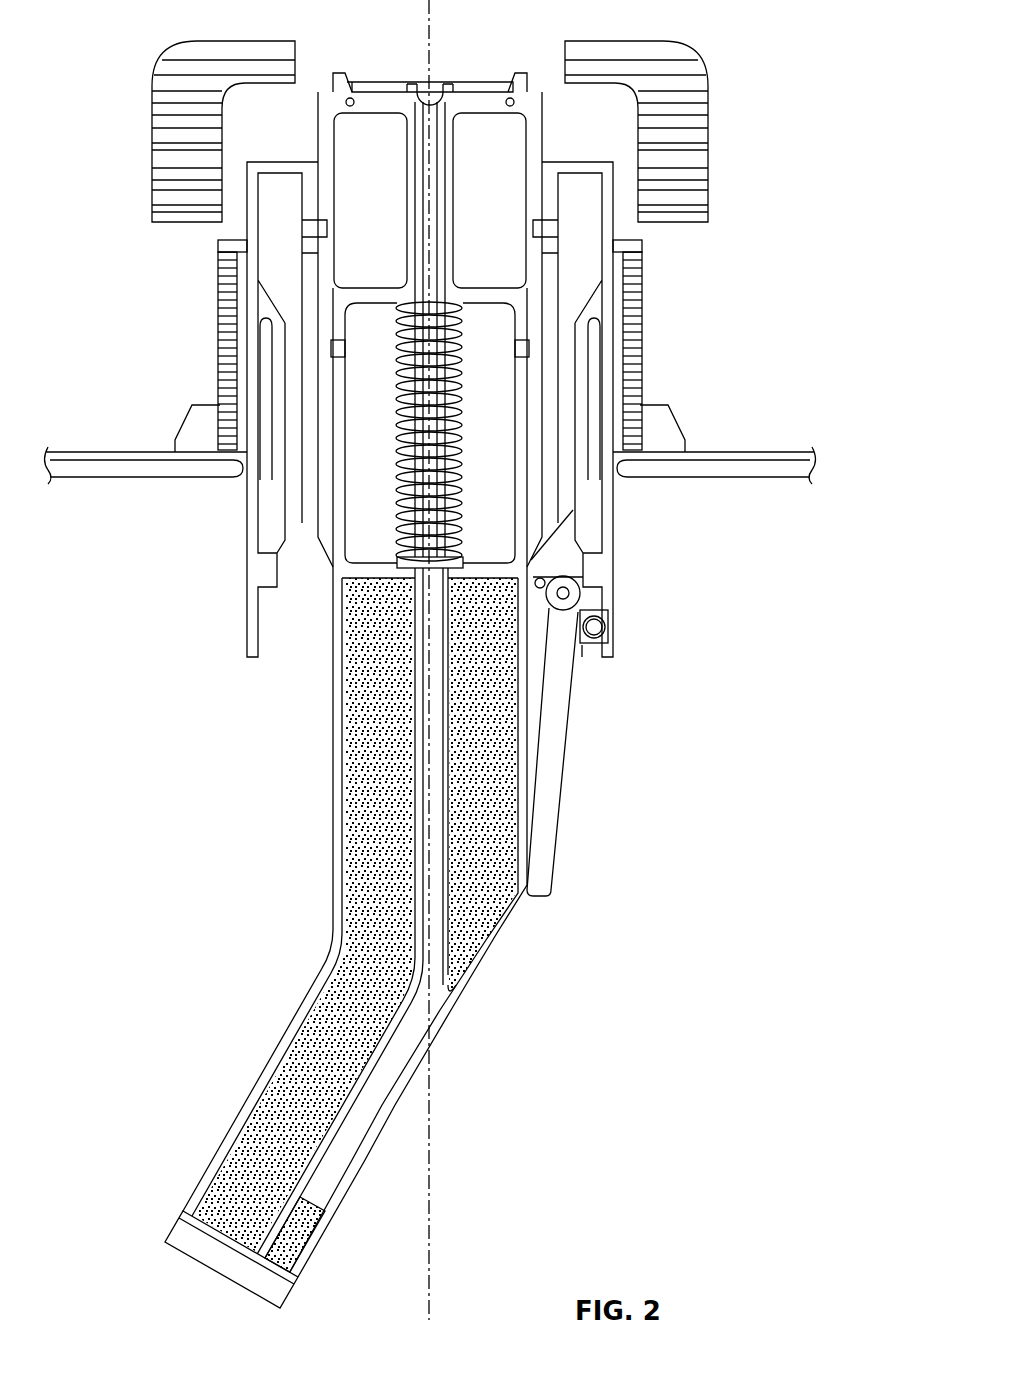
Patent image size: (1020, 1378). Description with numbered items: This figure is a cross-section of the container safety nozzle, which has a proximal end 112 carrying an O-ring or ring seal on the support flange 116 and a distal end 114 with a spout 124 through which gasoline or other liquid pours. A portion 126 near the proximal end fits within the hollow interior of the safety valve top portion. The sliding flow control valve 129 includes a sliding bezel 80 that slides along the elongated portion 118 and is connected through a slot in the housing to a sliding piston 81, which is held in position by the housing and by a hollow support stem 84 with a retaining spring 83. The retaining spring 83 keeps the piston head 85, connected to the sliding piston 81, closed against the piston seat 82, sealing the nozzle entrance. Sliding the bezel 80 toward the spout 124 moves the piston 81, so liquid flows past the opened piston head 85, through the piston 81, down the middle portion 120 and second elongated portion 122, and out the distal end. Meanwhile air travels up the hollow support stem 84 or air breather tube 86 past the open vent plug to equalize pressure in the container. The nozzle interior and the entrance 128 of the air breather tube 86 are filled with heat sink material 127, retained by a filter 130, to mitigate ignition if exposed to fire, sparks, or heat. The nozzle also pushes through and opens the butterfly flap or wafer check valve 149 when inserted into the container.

The sliding bezel 80 is at (537, 350).
The sliding piston 81 is at (353, 310).
The piston seat 82 is at (432, 92).
The retaining spring 83 is at (397, 390).
The hollow support stem 84 is at (400, 468).
The piston head 85 is at (375, 103).
The air breather tube 86 is at (428, 702).
The proximal end 112 is at (528, 82).
The distal end 114 is at (307, 1257).
The support flange 116 is at (575, 162).
The elongated portion 118 is at (332, 767).
The middle portion 120 is at (497, 933).
The second elongated portion 122 is at (400, 1100).
The spout 124 is at (237, 1282).
The portion 126 is at (318, 130).
The heat sink material 127 is at (375, 912).
The entrance of the air breather tube 128 is at (310, 1212).
The sliding flow control valve 129 is at (557, 293).
The filter 130 is at (223, 1237).
The butterfly flap or wafer check valve 149 is at (563, 765).